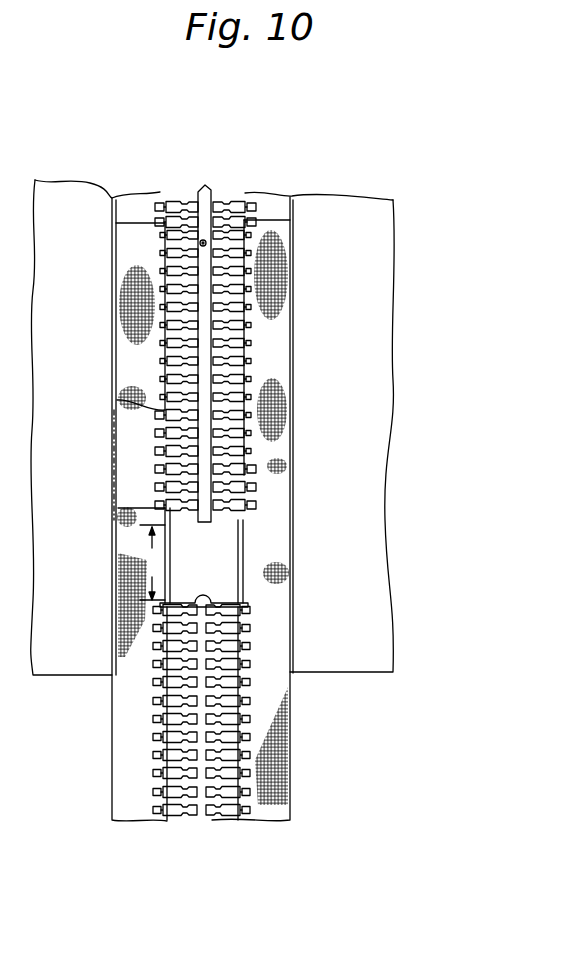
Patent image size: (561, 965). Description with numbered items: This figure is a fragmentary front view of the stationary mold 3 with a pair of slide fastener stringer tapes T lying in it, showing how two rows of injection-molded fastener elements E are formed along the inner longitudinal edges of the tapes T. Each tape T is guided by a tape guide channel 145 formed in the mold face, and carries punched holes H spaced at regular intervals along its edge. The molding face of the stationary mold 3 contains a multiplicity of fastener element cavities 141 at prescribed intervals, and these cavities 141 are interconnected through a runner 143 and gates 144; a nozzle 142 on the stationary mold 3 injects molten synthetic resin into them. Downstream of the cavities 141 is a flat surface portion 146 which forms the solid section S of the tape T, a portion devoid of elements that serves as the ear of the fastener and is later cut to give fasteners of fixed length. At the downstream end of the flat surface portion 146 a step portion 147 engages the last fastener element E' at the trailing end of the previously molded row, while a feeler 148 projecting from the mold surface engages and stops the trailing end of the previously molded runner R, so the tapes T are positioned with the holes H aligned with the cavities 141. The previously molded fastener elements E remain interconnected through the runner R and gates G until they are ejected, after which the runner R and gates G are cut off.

The stationary mold 3 is at (362, 610).
The tape guide channel 145 is at (129, 203).
The fastener element cavities 141 is at (172, 203).
The nozzle 142 is at (209, 192).
The runner 143 is at (207, 327).
The gates 144 is at (218, 362).
The punched holes H is at (249, 427).
The flat surface portion 146 is at (210, 533).
The step portion 147 is at (188, 597).
The feeler 148 is at (202, 600).
The solid section S is at (152, 562).
The last fastener element E' is at (244, 524).
The fastener elements E is at (241, 750).
The stringer tape T is at (122, 712).
The runner R is at (200, 812).
The gates G is at (213, 812).